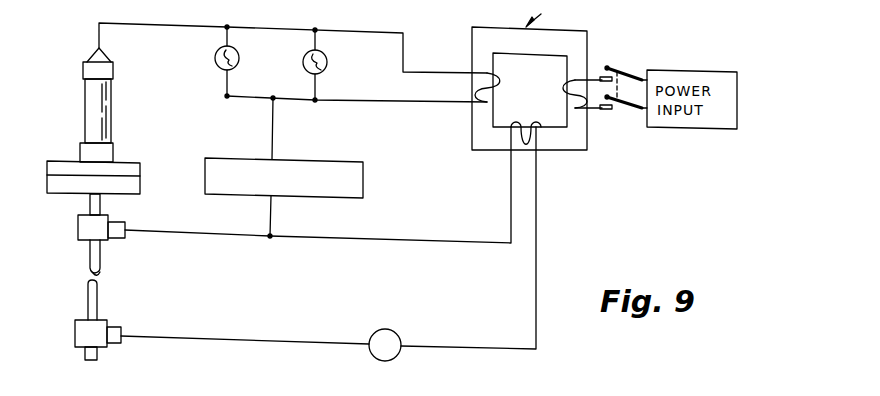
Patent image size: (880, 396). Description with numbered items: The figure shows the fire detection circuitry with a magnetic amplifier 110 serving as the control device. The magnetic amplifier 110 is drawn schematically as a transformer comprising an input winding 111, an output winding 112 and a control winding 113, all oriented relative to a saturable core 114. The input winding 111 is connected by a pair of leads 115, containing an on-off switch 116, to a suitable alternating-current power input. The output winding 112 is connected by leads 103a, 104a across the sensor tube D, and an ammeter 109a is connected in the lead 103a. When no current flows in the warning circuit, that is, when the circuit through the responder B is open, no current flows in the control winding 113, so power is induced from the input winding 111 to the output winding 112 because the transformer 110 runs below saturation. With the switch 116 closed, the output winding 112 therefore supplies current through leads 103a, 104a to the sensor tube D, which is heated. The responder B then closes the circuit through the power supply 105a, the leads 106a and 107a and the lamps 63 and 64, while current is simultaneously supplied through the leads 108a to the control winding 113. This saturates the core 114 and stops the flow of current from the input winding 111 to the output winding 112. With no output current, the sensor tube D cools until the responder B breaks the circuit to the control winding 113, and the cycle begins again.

The responder B is at (78, 106).
The sensor tube D is at (106, 272).
The lead 107a is at (178, 56).
The leads 108a is at (403, 66).
The lamp 63 is at (239, 62).
The lamp 64 is at (327, 62).
The power supply 105a is at (435, 191).
The lead 106a is at (340, 225).
The lead 104a is at (424, 279).
The lead 103a is at (460, 330).
The ammeter 109a is at (370, 356).
The magnetic amplifier 110 is at (588, 36).
The input winding 111 is at (561, 93).
The output winding 112 is at (536, 148).
The control winding 113 is at (476, 104).
The saturable core 114 is at (588, 148).
The leads 115 is at (606, 70).
The on-off switch 116 is at (616, 112).